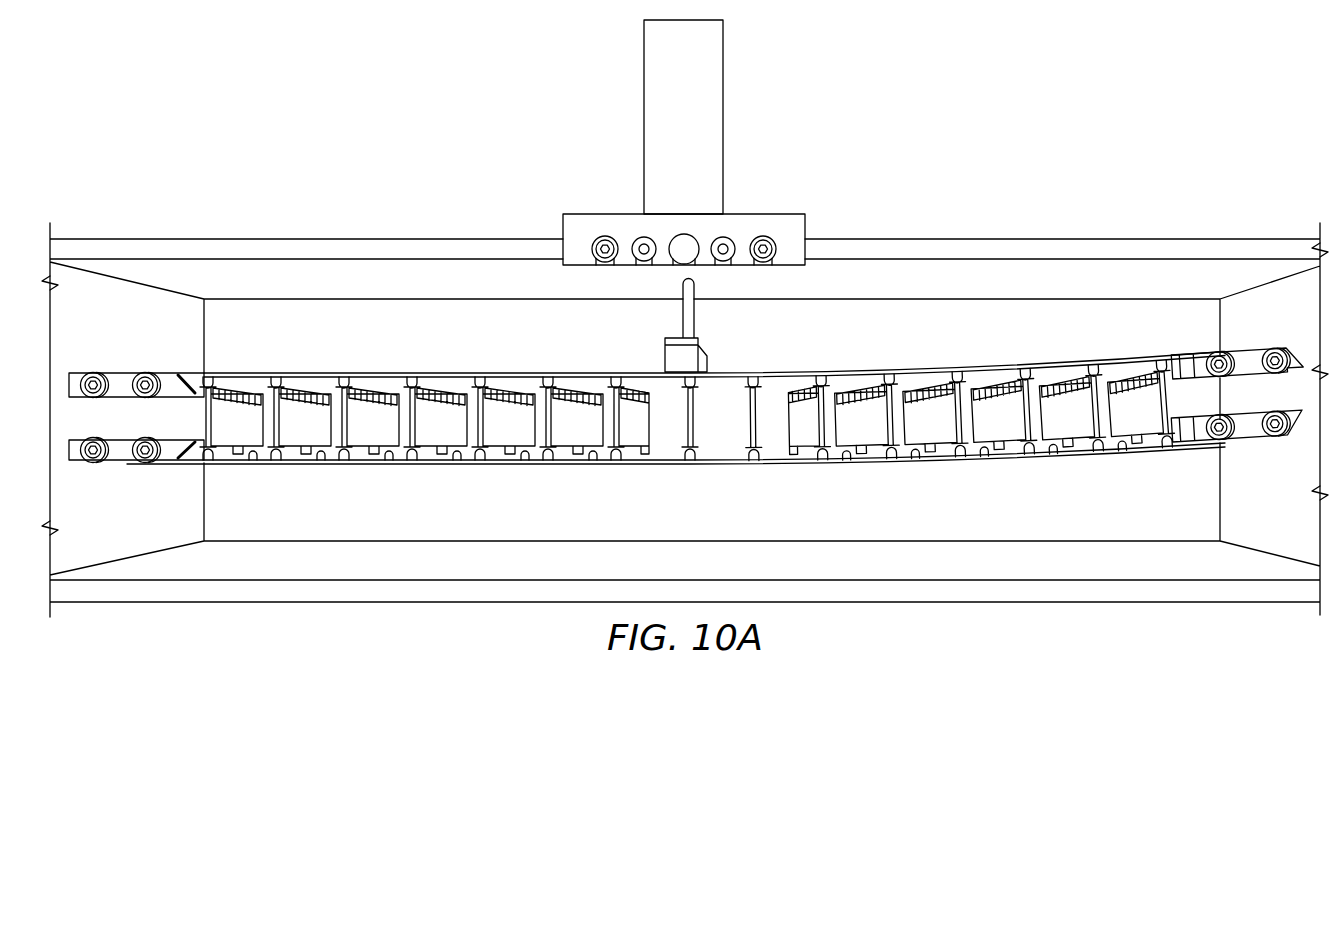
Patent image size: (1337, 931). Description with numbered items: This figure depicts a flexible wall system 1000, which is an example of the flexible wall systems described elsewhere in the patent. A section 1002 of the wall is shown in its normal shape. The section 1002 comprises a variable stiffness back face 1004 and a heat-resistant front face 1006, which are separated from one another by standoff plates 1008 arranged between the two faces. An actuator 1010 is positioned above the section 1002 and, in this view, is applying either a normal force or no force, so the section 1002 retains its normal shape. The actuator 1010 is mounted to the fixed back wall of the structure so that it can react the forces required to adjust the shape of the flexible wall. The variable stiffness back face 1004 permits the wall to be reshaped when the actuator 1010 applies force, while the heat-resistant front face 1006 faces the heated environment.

The flexible wall system 1000 is at (1024, 94).
The section 1002 is at (211, 211).
The variable stiffness back face 1004 is at (372, 372).
The heat-resistant front face 1006 is at (380, 464).
The standoff plates 1008 is at (877, 418).
The actuator 1010 is at (741, 110).